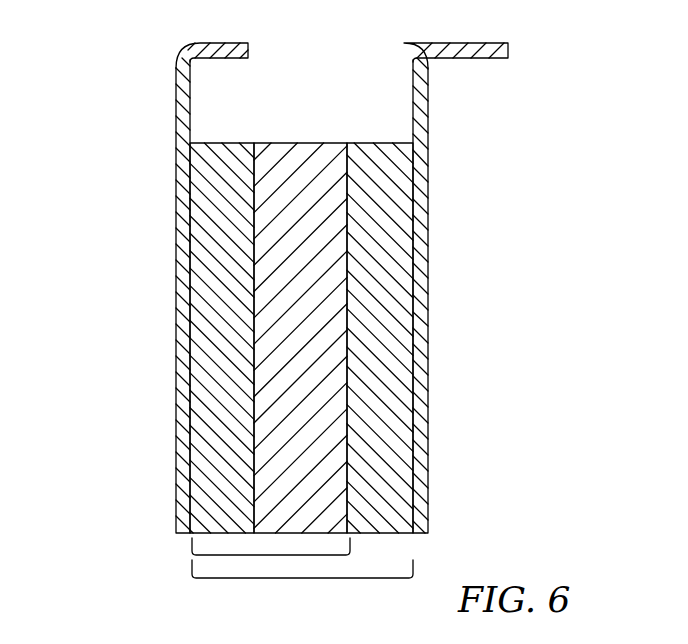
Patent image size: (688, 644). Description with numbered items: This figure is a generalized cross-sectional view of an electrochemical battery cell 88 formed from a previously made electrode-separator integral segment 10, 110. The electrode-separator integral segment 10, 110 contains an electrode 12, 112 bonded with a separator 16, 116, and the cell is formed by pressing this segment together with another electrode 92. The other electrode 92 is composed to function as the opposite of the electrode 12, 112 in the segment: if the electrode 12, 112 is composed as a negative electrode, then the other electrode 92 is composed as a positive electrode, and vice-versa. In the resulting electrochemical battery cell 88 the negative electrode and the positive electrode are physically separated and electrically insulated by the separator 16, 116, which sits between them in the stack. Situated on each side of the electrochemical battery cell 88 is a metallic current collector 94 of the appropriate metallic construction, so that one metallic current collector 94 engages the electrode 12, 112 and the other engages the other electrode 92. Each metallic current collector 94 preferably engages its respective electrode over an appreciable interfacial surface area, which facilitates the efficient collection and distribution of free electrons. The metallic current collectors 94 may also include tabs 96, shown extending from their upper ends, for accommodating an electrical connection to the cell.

The electrode-separator integral segment 10 is at (239, 314).
The electrode-separator integral segment 110 is at (239, 314).
The electrode 12 is at (259, 273).
The electrode 112 is at (220, 143).
The separator 16 is at (306, 302).
The separator 116 is at (290, 143).
The electrode 92 is at (378, 143).
The metallic current collector 94 is at (176, 270).
The tab 96 is at (176, 78).
The electrochemical battery cell 88 is at (266, 320).